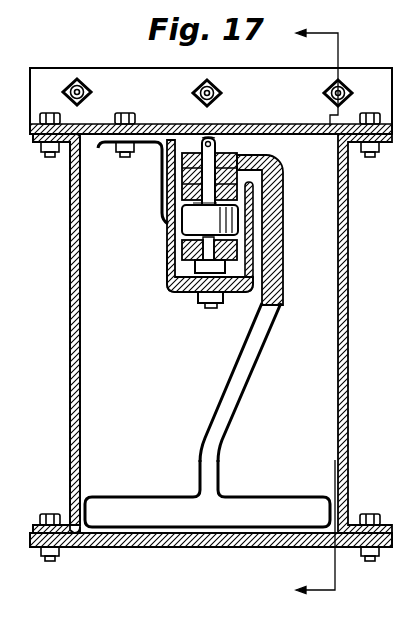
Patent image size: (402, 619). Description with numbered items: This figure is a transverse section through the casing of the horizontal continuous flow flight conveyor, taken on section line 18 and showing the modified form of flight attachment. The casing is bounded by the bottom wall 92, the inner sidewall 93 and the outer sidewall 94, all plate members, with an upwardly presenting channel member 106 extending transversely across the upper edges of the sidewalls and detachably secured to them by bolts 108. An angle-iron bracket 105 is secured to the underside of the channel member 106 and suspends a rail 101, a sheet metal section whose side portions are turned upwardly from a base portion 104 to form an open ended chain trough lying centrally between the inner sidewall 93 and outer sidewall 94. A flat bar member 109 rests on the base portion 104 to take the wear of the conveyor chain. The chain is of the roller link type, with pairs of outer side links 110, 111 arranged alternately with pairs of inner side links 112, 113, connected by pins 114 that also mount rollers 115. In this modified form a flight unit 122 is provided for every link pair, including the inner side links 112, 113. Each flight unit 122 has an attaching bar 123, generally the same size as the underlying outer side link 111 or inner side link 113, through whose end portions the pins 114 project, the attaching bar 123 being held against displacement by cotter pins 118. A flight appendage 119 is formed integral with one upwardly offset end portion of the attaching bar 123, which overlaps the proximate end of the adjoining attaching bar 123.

The section line 18- 18 is at (342, 315).
The bottom wall 92 is at (137, 546).
The inner sidewall 93 is at (393, 353).
The outer sidewall 94 is at (72, 387).
The rail 101 is at (158, 354).
The base portion 104 is at (236, 296).
The angle-iron bracket 105 is at (162, 160).
The channel member 106 is at (152, 125).
The bolt 108 is at (217, 89).
The flat bar member 109 is at (170, 280).
The outer side link 110 is at (183, 262).
The outer side link 111 is at (270, 175).
The inner side link 112 is at (183, 247).
The inner side link 113 is at (242, 196).
The pin 114 is at (215, 157).
The roller 115 is at (238, 219).
The cotter pin 118 is at (214, 141).
The flight appendage 119 is at (245, 347).
The flight unit 122 is at (207, 415).
The attaching bar 123 is at (270, 157).